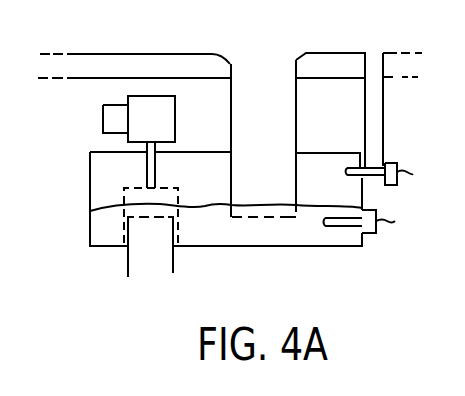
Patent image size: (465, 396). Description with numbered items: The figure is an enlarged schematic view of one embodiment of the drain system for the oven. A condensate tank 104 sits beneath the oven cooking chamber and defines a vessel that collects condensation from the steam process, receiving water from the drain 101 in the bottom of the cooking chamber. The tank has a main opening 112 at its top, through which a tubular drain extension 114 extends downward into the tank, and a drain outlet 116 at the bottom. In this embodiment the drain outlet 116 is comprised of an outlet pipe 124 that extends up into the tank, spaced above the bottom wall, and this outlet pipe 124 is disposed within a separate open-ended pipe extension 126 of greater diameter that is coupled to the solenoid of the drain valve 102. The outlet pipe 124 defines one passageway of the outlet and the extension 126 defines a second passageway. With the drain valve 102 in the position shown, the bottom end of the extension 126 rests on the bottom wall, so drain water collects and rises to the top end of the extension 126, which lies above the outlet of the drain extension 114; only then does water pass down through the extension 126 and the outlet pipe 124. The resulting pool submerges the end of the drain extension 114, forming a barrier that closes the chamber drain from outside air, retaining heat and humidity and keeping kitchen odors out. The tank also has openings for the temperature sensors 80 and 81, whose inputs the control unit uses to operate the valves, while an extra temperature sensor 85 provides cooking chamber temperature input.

The drain 101 is at (220, 55).
The drain valve 102 is at (103, 118).
The condensate tank 104 is at (90, 191).
The main opening 112 is at (297, 121).
The tubular drain extension 114 is at (230, 138).
The drain outlet 116 is at (121, 259).
The outlet pipe 124 is at (173, 258).
The pipe extension 126 is at (196, 194).
The temperature sensor 80 is at (392, 164).
The temperature sensor 81 is at (378, 233).
The temperature sensor 85 is at (375, 93).